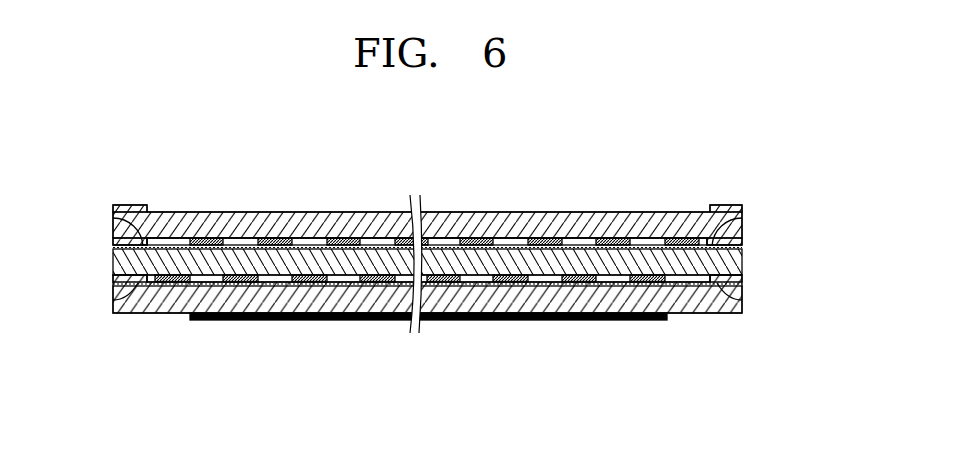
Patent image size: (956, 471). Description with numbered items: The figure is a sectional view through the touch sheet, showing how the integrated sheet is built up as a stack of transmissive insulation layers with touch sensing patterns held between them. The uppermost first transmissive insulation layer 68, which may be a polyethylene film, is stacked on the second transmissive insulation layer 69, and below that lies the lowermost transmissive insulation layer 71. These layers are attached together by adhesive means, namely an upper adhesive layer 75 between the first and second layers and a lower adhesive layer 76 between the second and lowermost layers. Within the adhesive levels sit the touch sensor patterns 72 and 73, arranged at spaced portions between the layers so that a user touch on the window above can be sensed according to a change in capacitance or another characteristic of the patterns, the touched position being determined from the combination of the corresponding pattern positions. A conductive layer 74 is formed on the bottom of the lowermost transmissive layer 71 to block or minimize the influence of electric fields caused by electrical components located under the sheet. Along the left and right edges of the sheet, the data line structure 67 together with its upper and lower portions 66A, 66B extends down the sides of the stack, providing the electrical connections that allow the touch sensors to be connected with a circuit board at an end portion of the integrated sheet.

The data line structure 66A is at (113, 221).
The data line structure 66B is at (113, 300).
The data line structure 67 is at (133, 205).
The first transmissive insulation layer 68 is at (179, 226).
The second transmissive insulation layer 69 is at (113, 264).
The transmissive insulation layer 71 is at (129, 302).
The touch sensor 72 is at (272, 241).
The touch sensor 73 is at (167, 283).
The conductive layer 74 is at (258, 321).
The adhesive layer 75 is at (133, 246).
The adhesive layer 76 is at (133, 283).